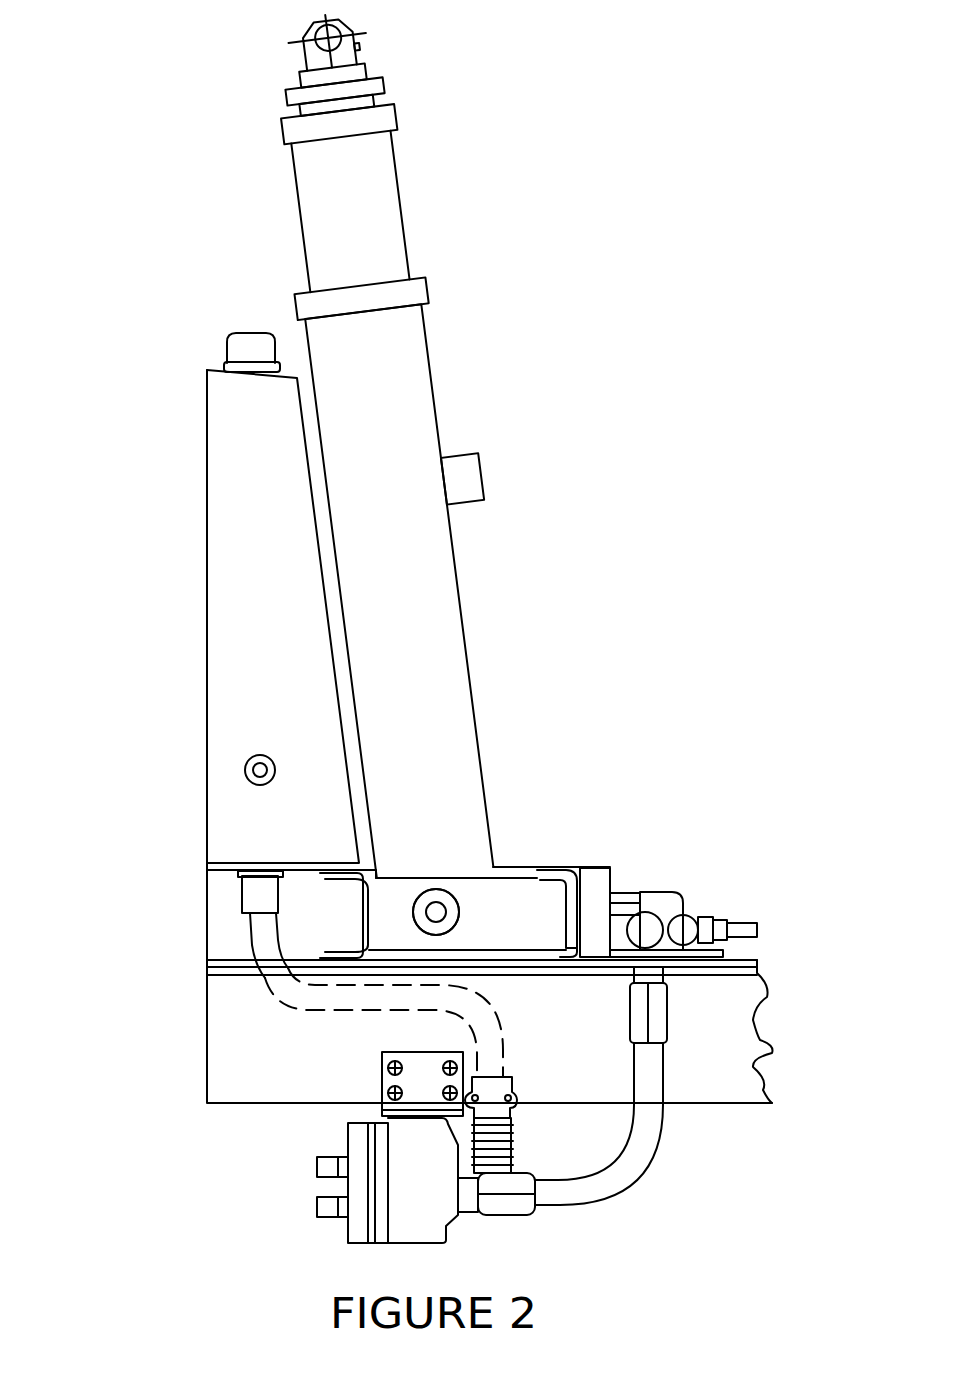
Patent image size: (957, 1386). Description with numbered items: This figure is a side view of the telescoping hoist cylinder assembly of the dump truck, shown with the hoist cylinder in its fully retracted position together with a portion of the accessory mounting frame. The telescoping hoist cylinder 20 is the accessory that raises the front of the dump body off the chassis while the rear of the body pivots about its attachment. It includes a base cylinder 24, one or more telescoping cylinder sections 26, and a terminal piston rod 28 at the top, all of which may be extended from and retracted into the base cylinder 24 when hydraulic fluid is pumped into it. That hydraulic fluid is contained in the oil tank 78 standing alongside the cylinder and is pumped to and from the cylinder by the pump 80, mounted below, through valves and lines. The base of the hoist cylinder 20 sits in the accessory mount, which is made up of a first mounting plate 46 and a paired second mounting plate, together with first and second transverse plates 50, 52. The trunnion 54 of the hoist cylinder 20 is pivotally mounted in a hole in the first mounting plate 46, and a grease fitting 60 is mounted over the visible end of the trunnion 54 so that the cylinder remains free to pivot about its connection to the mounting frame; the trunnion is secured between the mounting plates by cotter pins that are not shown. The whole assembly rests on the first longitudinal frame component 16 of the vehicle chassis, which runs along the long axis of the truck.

The first longitudinal frame component 16 is at (243, 1057).
The telescoping hoist cylinder 20 is at (438, 381).
The base cylinder 24 is at (420, 560).
The telescoping cylinder section 26 is at (340, 107).
The terminal piston rod 28 is at (372, 54).
The first mounting plate 46 is at (520, 903).
The first transverse plate 50 is at (356, 909).
The second transverse plate 52 is at (578, 889).
The trunnion 54 is at (438, 910).
The grease fitting 60 is at (463, 884).
The oil tank 78 is at (240, 520).
The pump 80 is at (437, 1191).